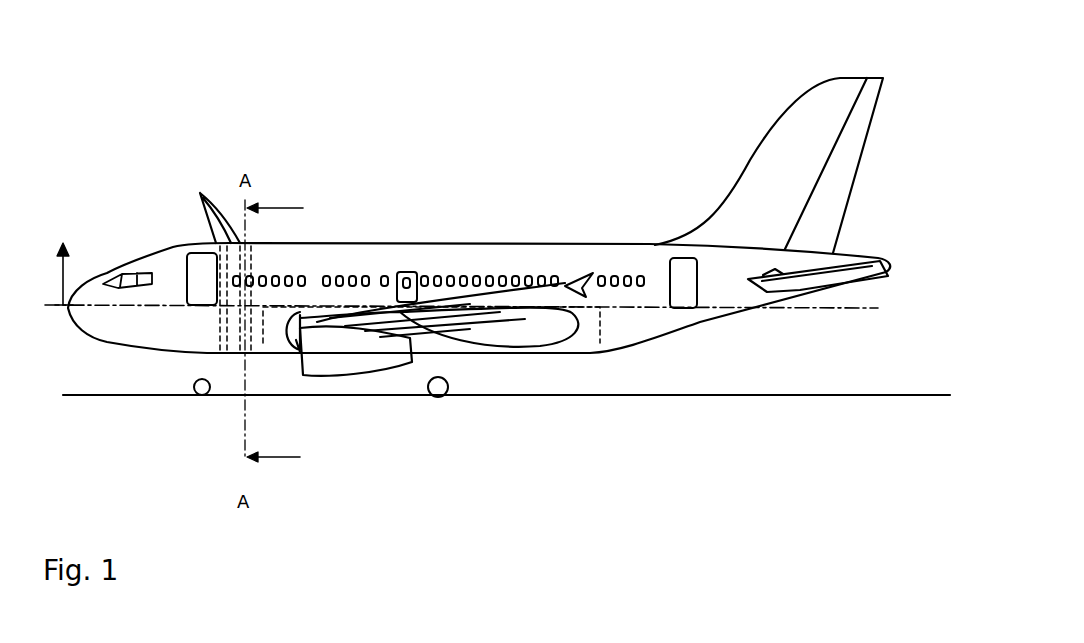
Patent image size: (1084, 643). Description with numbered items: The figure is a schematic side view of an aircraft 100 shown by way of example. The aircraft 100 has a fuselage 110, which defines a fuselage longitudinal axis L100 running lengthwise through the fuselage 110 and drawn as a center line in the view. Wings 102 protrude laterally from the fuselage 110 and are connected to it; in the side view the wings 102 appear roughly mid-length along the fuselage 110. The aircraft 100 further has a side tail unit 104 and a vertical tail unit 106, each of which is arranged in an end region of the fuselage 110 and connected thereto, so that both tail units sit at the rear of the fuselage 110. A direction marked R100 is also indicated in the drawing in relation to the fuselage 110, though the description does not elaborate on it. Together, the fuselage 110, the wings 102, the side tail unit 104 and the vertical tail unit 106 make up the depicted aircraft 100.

The aircraft 100 is at (555, 160).
The wings 102 is at (528, 295).
The side tail unit 104 is at (792, 104).
The vertical tail unit 106 is at (820, 287).
The fuselage 110 is at (352, 210).
The radial direction of aircraft R100 is at (67, 275).
The fuselage longitudinal axis L100 is at (853, 310).